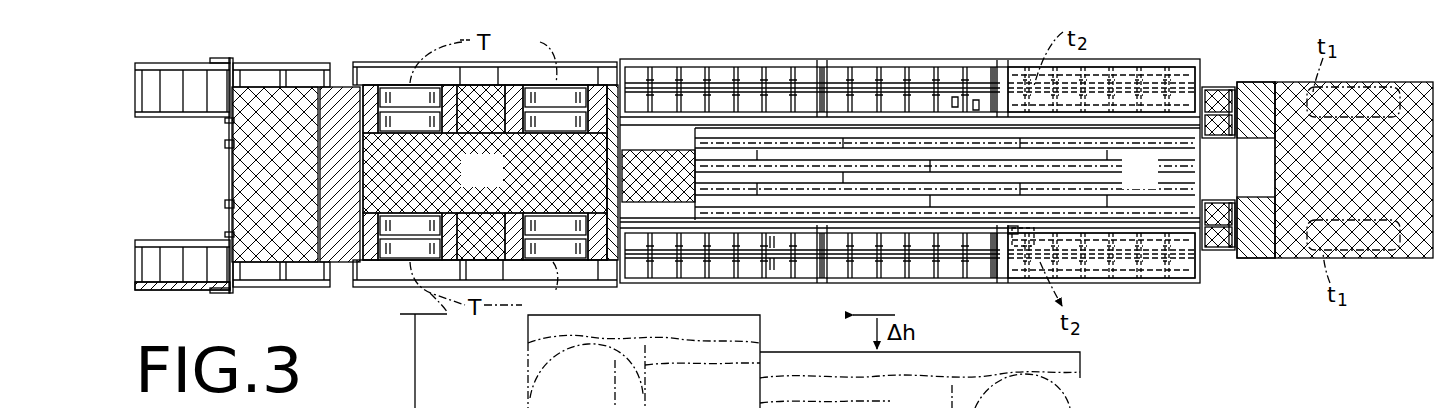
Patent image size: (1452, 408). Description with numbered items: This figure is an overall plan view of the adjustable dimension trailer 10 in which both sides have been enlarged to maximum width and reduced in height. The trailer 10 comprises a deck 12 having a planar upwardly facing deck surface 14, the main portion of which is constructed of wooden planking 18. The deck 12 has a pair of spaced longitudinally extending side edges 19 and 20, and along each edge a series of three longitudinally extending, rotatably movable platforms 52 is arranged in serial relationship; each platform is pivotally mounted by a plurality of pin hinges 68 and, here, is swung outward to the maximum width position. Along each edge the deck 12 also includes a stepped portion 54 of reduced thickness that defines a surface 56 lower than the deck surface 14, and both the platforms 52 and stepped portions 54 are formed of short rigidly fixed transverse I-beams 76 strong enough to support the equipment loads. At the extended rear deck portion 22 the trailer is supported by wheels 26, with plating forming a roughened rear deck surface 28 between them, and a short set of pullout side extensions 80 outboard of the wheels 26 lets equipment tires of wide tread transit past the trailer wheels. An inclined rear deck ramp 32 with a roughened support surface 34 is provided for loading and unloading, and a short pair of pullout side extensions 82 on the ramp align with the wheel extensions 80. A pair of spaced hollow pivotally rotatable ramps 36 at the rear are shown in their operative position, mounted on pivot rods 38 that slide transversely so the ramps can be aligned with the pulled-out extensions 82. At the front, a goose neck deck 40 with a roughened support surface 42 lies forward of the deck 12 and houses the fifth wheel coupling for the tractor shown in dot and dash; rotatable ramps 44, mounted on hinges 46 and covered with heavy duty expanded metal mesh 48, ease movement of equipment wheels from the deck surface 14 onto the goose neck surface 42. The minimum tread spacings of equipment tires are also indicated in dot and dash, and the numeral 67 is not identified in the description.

The adjustable dimension trailer 10 is at (997, 38).
The deck 12 is at (810, 57).
The deck surface 14 is at (1066, 118).
The wooden planking 18 is at (1156, 186).
The side edge 19 is at (697, 90).
The side edge 20 is at (668, 260).
The rear deck portion 22 is at (484, 124).
The wheels 26 is at (400, 93).
The rear deck surface 28 is at (500, 183).
The rear deck ramp 32 is at (238, 168).
The support surface 34 is at (258, 182).
The pivotally rotatable ramps 36 is at (152, 118).
The pivot rods 38 is at (230, 128).
The goose neck deck 40 is at (1347, 80).
The support surface 42 is at (1413, 92).
The rotatable ramps 44 is at (1217, 97).
The hinges 46 is at (1236, 138).
The expanded metal mesh 48 is at (1228, 100).
The platforms 52 is at (747, 58).
The stepped portion 54 is at (956, 108).
The surface 56 is at (1040, 260).
The rail segment 67 is at (987, 283).
The pin hinges 68 is at (1117, 84).
The transverse I-beams 76 is at (773, 267).
The pullout side extensions 80 is at (387, 62).
The pullout side extensions 82 is at (261, 63).